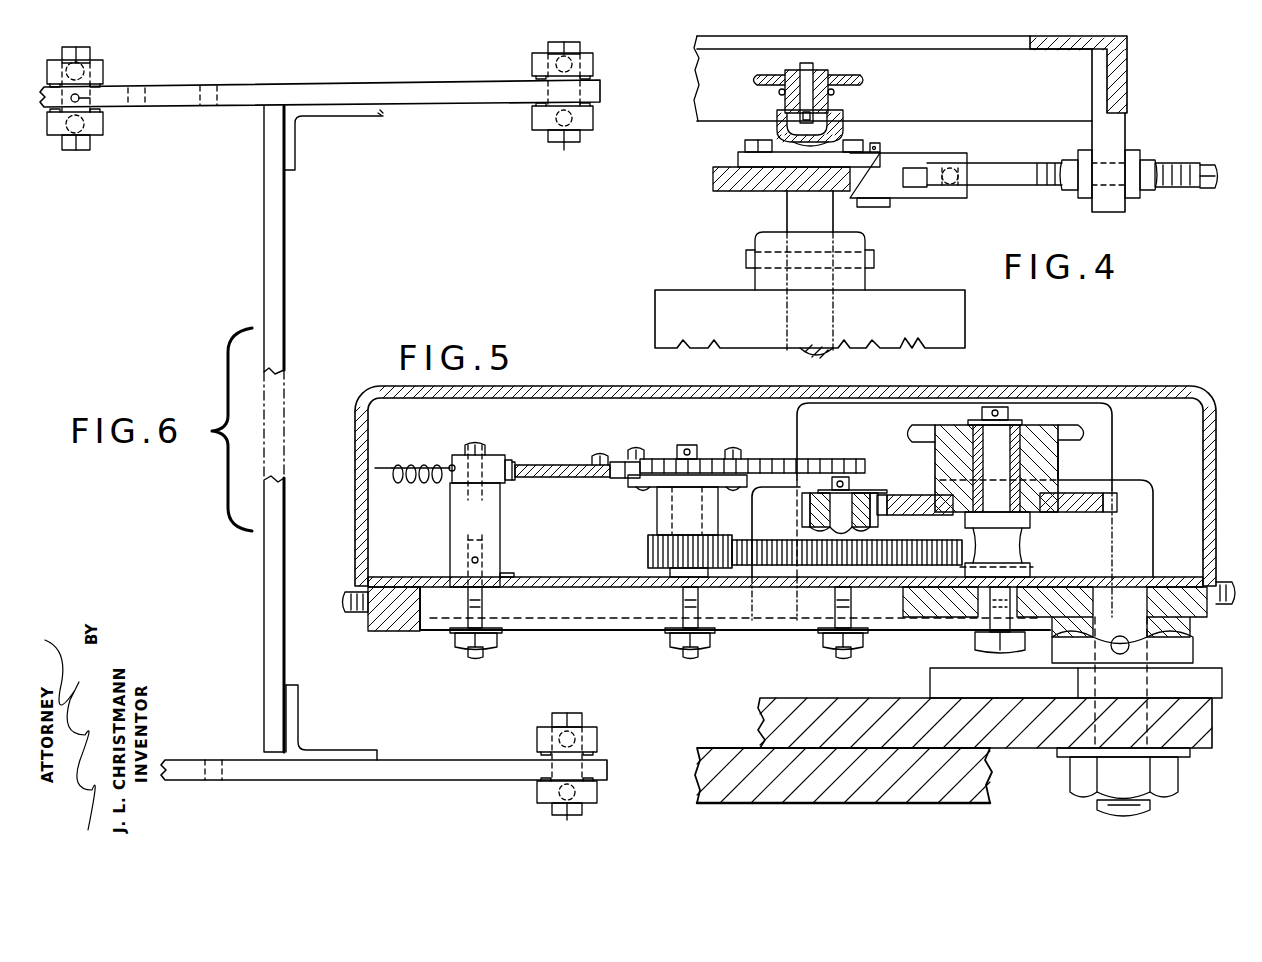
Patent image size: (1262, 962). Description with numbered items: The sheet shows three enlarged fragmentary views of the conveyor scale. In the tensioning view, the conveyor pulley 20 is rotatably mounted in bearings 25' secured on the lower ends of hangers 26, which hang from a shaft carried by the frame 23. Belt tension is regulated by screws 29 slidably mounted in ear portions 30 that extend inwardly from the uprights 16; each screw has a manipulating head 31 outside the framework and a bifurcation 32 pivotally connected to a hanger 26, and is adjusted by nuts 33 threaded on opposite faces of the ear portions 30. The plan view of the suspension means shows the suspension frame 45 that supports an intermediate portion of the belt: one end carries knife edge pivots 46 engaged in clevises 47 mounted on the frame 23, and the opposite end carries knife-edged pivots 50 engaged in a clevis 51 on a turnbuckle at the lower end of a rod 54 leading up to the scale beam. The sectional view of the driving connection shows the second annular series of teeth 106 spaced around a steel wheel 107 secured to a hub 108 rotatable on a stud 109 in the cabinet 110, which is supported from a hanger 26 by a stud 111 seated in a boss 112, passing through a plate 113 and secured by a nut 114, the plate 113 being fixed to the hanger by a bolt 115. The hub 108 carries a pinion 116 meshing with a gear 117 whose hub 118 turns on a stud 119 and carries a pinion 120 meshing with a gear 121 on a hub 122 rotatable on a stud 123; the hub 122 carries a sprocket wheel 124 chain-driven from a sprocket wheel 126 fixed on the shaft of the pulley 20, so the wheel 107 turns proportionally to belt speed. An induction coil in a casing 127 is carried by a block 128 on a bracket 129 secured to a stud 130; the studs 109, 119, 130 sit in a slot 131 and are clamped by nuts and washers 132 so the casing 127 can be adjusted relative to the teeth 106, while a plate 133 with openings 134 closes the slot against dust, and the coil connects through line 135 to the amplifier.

In FIG. 4, the uprights 16 is at (1127, 84).
In FIG. 4, the pulley 20 is at (962, 316).
In FIG. 5, the frame 23 is at (720, 752).
In FIG. 4, the bearings 25' is at (836, 104).
In FIG. 4, the hangers 26 is at (718, 192).
In FIG. 5, the hangers 26 is at (760, 716).
In FIG. 4, the screws 29 is at (1178, 192).
In FIG. 4, the ear portions 30 is at (1110, 134).
In FIG. 4, the manipulating head 31 is at (1210, 190).
In FIG. 4, the bifurcation 32 is at (918, 198).
In FIG. 4, the nuts 33 is at (1082, 200).
In FIG. 6, the suspension frame 45 is at (200, 85).
In FIG. 6, the knife edge pivots 46 is at (565, 150).
In FIG. 6, the clevises 47 is at (585, 63).
In FIG. 6, the knife-edged pivots 50 is at (80, 150).
In FIG. 6, the clevis 51 is at (58, 128).
In FIG. 6, the rod 54 is at (98, 100).
In FIG. 5, the second annular series of teeth 106 is at (560, 477).
In FIG. 5, the steel wheel 107 is at (612, 465).
In FIG. 5, the hub 108 is at (665, 510).
In FIG. 5, the stud 109 is at (697, 452).
In FIG. 5, the cabinet 110 is at (1098, 381).
In FIG. 5, the stud 111 is at (1150, 812).
In FIG. 5, the boss 112 is at (1190, 635).
In FIG. 5, the plate 113 is at (930, 682).
In FIG. 5, the nut 114 is at (1072, 780).
In FIG. 5, the bolt 115 is at (985, 655).
In FIG. 5, the pinion 116 is at (648, 550).
In FIG. 5, the gear 117 is at (780, 530).
In FIG. 5, the hub 118 is at (900, 495).
In FIG. 5, the stud 119 is at (875, 490).
In FIG. 5, the pinion 120 is at (802, 502).
In FIG. 5, the gear 121 is at (1090, 512).
In FIG. 5, the hub 122 is at (1062, 462).
In FIG. 5, the stud 123 is at (1010, 548).
In FIG. 5, the sprocket wheel 124 is at (1090, 432).
In FIG. 4, the sprocket wheel 126 is at (757, 83).
In FIG. 5, the casing 127 is at (520, 465).
In FIG. 5, the block 128 is at (490, 465).
In FIG. 5, the bracket 129 is at (490, 527).
In FIG. 5, the stud 130 is at (466, 610).
In FIG. 5, the slot 131 is at (585, 618).
In FIG. 5, the nuts and washers 132 is at (490, 640).
In FIG. 5, the plate 133 is at (575, 577).
In FIG. 5, the openings 134 is at (503, 578).
In FIG. 5, the line 135 is at (390, 468).